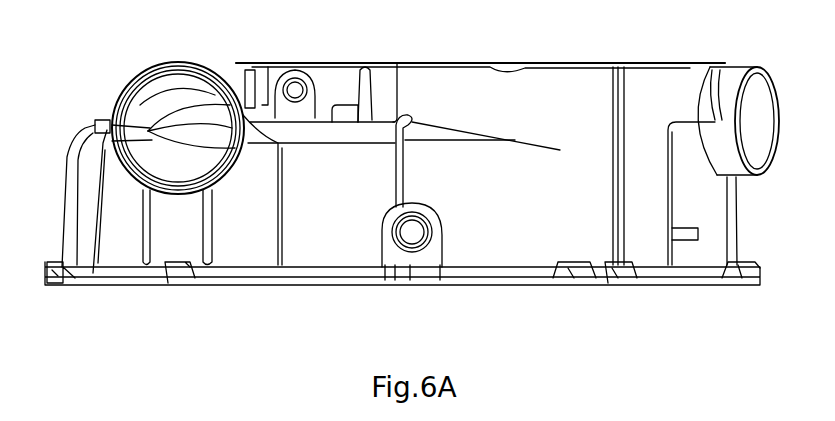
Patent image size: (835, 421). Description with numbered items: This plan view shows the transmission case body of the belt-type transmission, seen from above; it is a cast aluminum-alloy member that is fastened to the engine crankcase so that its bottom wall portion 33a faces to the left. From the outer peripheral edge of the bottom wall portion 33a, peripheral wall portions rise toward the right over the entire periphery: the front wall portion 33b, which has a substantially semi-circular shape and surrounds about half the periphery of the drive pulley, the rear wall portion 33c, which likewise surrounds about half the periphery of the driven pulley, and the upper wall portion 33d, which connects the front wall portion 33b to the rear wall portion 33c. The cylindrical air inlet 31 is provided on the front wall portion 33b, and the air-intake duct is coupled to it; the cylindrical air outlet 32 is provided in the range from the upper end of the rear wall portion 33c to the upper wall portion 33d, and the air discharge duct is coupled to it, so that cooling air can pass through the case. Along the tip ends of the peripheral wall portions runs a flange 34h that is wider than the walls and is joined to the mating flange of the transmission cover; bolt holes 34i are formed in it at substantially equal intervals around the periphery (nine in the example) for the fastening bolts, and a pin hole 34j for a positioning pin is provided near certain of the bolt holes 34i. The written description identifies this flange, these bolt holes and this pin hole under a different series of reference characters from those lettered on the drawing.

The cylindrical air inlet 31 is at (740, 67).
The cylindrical air outlet 32 is at (158, 63).
The bottom wall portion 33a is at (460, 63).
The front wall portion 33b is at (735, 205).
The rear wall portion 33c is at (77, 172).
The upper wall portion 33d is at (585, 83).
The bottom flange 34h is at (490, 286).
The mounting foot 34i is at (55, 284).
The mounting foot 34j is at (575, 284).